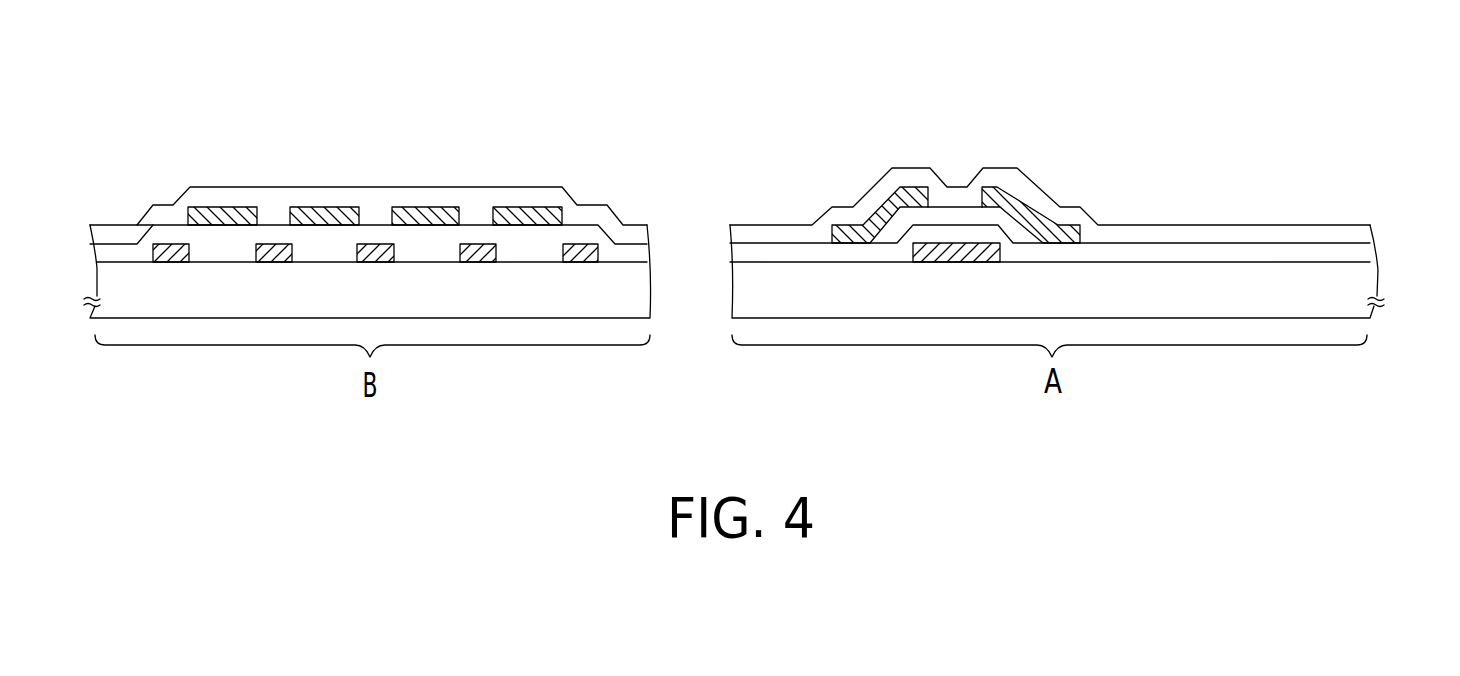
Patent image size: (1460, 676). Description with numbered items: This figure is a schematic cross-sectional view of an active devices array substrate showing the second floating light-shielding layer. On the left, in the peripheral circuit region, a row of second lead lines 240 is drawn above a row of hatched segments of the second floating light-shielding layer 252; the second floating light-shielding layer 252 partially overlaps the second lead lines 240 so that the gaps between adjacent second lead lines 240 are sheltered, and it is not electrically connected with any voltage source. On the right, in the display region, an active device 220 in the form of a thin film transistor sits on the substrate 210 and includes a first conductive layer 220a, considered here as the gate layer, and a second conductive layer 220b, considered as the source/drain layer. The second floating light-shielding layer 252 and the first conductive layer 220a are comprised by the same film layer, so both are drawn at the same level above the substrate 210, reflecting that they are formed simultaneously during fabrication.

The substrate 210 is at (1367, 278).
The active device 220 is at (1050, 146).
The first conductive layer 220a is at (953, 257).
The second conductive layer 220b is at (858, 232).
The second lead line 240 is at (503, 222).
The second floating light-shielding layer 252 is at (583, 257).